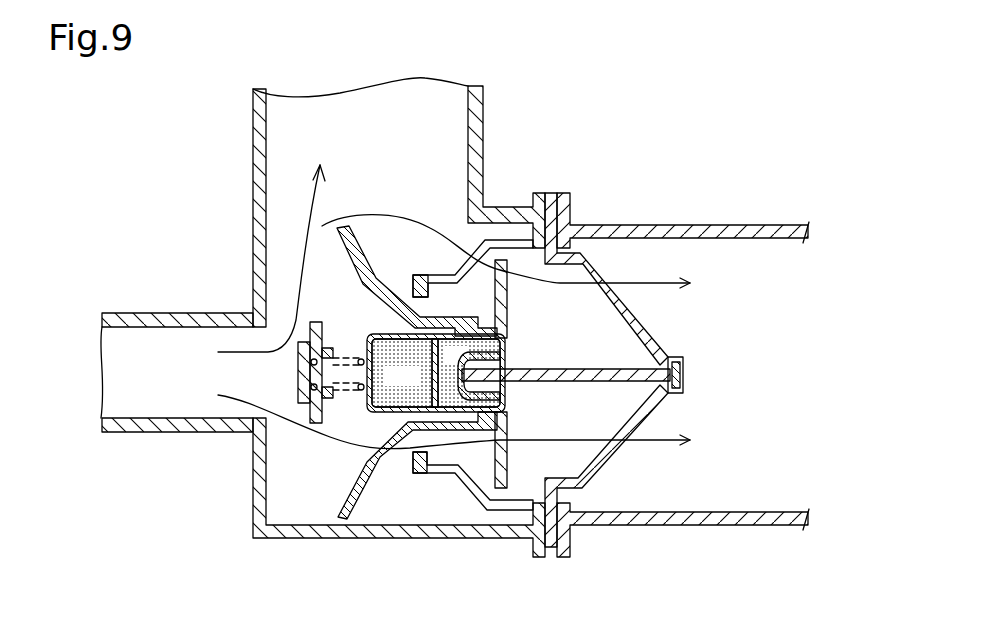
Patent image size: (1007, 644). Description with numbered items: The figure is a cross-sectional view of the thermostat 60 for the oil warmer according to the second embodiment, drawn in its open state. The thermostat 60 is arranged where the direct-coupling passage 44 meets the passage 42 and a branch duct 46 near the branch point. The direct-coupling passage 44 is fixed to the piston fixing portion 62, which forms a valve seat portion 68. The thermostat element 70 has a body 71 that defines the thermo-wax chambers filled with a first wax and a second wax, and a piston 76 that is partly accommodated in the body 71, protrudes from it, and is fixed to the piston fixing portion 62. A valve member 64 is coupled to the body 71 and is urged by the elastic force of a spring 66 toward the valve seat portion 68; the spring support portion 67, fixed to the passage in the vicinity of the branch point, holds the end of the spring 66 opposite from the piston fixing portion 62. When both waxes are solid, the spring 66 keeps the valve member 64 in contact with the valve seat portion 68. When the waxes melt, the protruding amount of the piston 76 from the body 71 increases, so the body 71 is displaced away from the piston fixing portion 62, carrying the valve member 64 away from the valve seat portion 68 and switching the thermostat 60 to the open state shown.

The intake pipe 42 is at (167, 313).
The direct-coupling passage 44 is at (688, 520).
The branch duct 46 is at (471, 119).
The thermostat 60 is at (615, 149).
The piston fixing portion 62 is at (645, 327).
The valve member 64 is at (508, 321).
The spring 66 is at (360, 359).
The spring support portion 67 is at (297, 379).
The valve seat portion 68 is at (538, 257).
The thermostat element 70 is at (512, 351).
The body 71 is at (508, 400).
The piston 76 is at (601, 368).